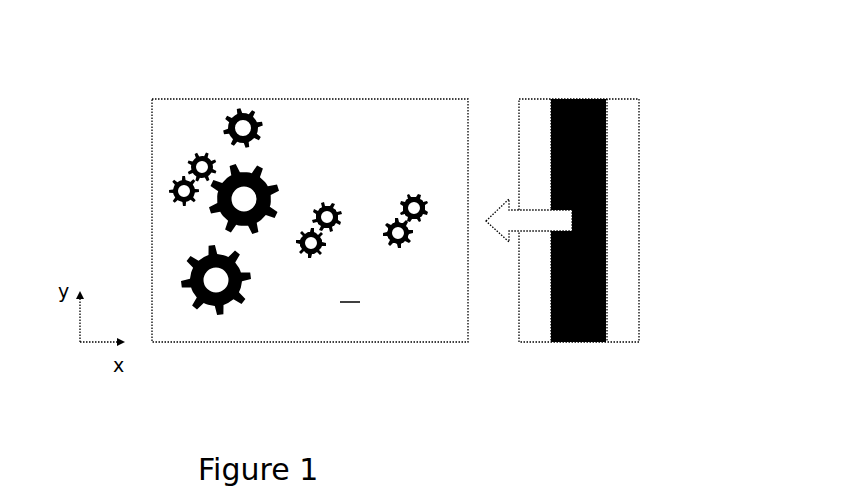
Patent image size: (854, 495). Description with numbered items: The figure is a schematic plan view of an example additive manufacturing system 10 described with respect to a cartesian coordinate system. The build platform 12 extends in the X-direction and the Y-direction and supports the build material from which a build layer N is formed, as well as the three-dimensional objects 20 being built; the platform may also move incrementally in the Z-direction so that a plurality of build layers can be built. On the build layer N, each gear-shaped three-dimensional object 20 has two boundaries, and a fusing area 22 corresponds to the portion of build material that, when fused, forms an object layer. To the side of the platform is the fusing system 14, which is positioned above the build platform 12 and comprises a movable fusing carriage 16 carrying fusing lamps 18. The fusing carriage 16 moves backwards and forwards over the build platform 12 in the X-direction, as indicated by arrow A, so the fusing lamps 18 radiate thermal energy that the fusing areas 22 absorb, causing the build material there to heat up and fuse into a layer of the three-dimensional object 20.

The additive manufacturing system 10 is at (186, 58).
The build platform 12 is at (347, 98).
The fusing system 14 is at (664, 73).
The movable fusing carriage 16 is at (570, 98).
The fusing lamps 18 is at (538, 110).
The 3D object 20 is at (176, 256).
The fusing area 22 is at (235, 306).